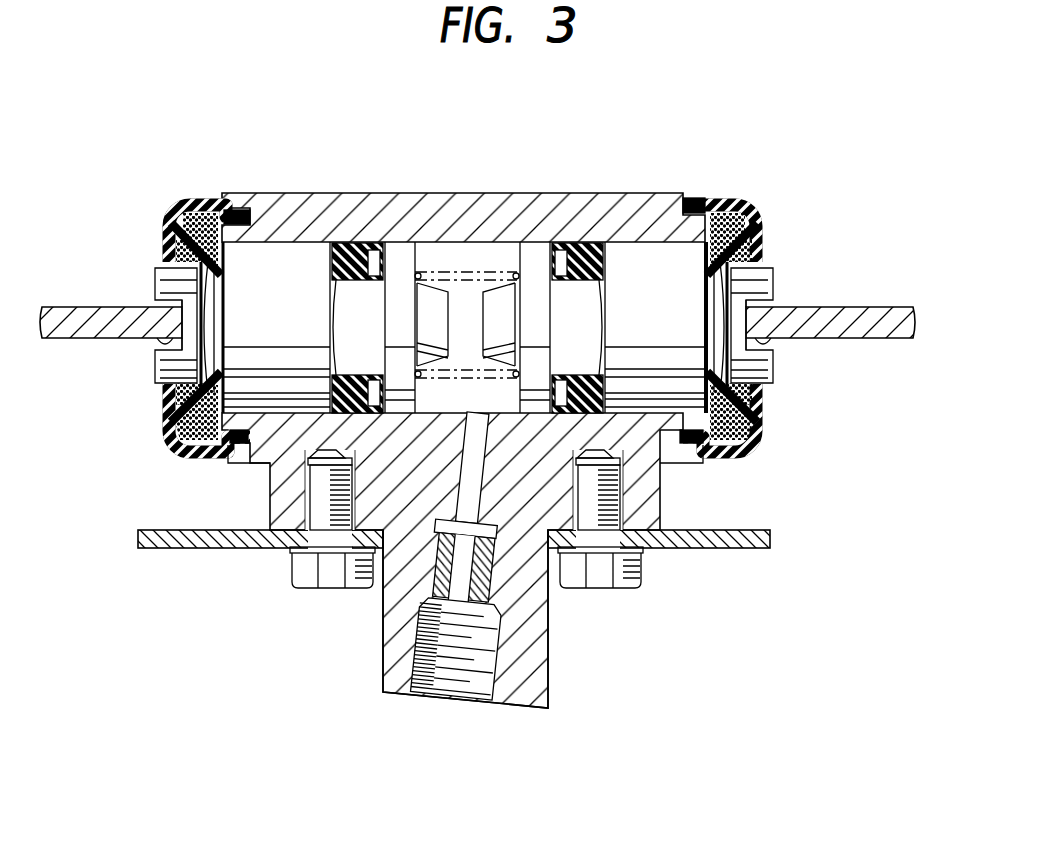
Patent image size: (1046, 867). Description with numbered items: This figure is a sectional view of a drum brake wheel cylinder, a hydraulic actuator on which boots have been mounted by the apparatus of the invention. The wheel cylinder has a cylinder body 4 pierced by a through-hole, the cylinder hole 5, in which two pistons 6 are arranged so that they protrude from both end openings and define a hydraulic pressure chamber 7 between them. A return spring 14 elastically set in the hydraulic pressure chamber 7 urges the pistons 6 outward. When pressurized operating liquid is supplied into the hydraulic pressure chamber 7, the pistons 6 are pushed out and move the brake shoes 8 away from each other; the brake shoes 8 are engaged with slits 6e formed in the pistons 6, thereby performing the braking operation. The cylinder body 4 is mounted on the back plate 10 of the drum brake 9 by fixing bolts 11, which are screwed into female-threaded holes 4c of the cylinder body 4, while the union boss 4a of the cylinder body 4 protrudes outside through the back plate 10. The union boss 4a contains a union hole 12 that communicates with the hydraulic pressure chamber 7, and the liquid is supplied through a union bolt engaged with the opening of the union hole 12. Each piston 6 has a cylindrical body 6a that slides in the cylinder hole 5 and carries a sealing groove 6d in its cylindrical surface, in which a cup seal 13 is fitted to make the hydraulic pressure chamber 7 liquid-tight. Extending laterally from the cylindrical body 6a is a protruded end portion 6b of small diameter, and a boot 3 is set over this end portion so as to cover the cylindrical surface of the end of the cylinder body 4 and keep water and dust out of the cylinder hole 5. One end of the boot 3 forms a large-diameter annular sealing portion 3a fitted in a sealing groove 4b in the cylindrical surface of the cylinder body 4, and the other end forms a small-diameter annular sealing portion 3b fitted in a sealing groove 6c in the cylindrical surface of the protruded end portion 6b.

The boot 3 is at (746, 190).
The large-diameter annular sealing portion 3a is at (690, 212).
The small-diameter annular sealing portion 3b is at (200, 274).
The cylinder body 4 is at (503, 218).
The union boss 4a is at (523, 693).
The sealing groove 4b is at (236, 200).
The female-threaded hole 4c is at (320, 515).
The cylinder hole 5 is at (298, 258).
The piston 6 is at (268, 228).
The cylindrical body 6a is at (643, 257).
The protruded end portion 6b is at (773, 290).
The sealing groove 6c is at (217, 308).
The sealing groove 6d is at (380, 258).
The slit 6e is at (153, 347).
The hydraulic pressure chamber 7 is at (462, 262).
The brake shoe 8 is at (75, 323).
The drum brake 9 is at (375, 147).
The back plate 10 is at (190, 545).
The fixing bolt 11 is at (328, 582).
The union hole 12 is at (467, 677).
The cup seal 13 is at (352, 262).
The return spring 14 is at (428, 265).